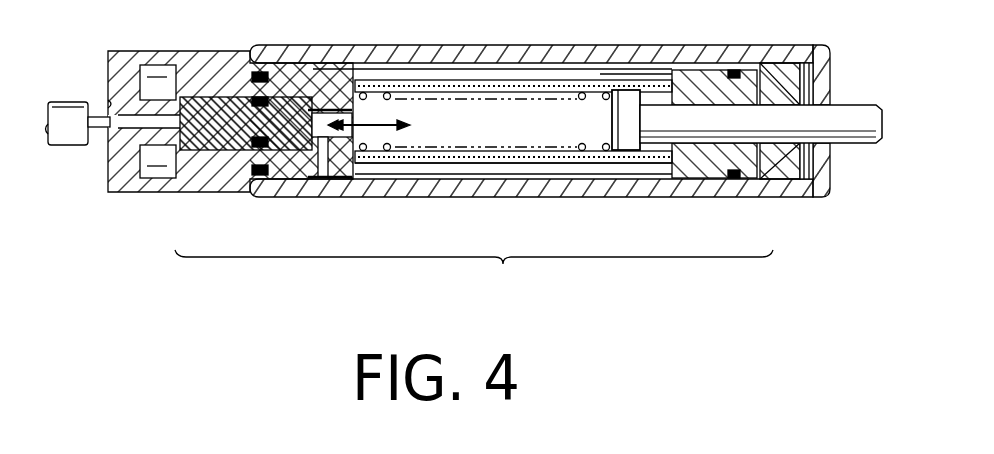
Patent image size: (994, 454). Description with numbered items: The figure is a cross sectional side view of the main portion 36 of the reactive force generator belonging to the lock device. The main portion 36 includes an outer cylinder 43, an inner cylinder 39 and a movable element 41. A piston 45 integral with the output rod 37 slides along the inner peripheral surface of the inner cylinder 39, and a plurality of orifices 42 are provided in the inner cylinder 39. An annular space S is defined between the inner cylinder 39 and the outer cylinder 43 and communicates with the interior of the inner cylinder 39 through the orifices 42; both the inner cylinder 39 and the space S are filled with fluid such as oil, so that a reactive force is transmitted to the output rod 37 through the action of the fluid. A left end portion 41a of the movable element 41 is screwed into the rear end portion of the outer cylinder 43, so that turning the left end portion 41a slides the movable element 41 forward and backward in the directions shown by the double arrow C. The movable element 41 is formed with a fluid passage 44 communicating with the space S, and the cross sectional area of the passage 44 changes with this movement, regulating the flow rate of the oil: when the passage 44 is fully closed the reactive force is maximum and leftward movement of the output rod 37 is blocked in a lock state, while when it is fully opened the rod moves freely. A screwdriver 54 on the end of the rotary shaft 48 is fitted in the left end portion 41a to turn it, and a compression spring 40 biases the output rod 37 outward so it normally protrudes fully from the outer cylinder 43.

The main portion 36 is at (474, 276).
The output rod 37 is at (752, 120).
The inner cylinder 39 is at (577, 163).
The compression spring 40 is at (483, 100).
The movable element 41 is at (200, 130).
The left end portion 41a is at (124, 108).
The orifices 42 is at (637, 73).
The outer cylinder 43 is at (463, 57).
The fluid passage 44 is at (327, 110).
The piston 45 is at (635, 170).
The rotary shaft 48 is at (69, 133).
The screwdriver 54 is at (100, 118).
The double arrow C is at (372, 134).
The annular space S is at (487, 173).